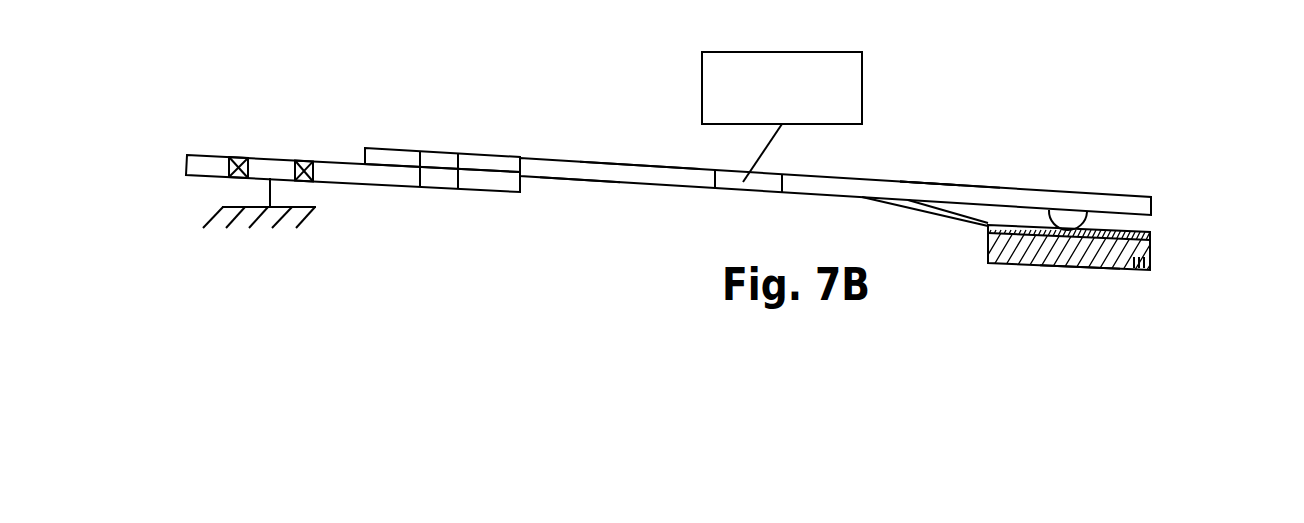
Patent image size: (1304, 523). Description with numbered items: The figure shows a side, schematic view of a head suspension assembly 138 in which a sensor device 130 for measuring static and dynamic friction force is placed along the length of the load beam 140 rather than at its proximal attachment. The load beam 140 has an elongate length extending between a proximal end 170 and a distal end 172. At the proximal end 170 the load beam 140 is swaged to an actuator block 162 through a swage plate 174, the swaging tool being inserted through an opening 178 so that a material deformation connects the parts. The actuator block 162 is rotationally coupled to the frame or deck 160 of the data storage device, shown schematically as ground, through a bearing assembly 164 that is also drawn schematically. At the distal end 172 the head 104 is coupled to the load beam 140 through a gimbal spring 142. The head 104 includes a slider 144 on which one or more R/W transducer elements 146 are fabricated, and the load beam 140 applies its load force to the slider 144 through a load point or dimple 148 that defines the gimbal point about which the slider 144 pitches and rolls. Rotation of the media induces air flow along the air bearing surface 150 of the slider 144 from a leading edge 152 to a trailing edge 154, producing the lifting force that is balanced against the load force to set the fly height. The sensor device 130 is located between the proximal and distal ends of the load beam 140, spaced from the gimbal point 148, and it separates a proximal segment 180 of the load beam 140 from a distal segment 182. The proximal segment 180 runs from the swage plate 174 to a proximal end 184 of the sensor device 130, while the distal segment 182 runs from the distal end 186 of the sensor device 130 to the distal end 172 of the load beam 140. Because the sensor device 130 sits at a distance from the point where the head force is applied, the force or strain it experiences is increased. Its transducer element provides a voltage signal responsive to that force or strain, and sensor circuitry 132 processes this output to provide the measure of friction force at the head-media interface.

The head 104 is at (1087, 265).
The sensor device 130 is at (770, 188).
The sensor circuitry 132 is at (813, 52).
The head suspension assembly 138 is at (948, 130).
The load beam 140 is at (603, 174).
The gimbal spring 142 is at (1152, 230).
The slider 144 is at (1042, 246).
The R/W transducer elements 146 is at (1146, 266).
The dimple 148 is at (1070, 218).
The air bearing surface 150 is at (1076, 270).
The leading edge 152 is at (988, 246).
The trailing edge 154 is at (1151, 253).
The deck 160 is at (302, 223).
The actuator block 162 is at (199, 160).
The bearing assembly 164 is at (238, 160).
The proximal end 170 is at (530, 165).
The distal end 172 is at (1152, 198).
The swage plate 174 is at (483, 162).
The opening 178 is at (440, 184).
The proximal segment 180 is at (572, 178).
The distal segment 182 is at (955, 194).
The proximal end of the sensor device 184 is at (712, 180).
The distal end of the sensor device 186 is at (786, 190).